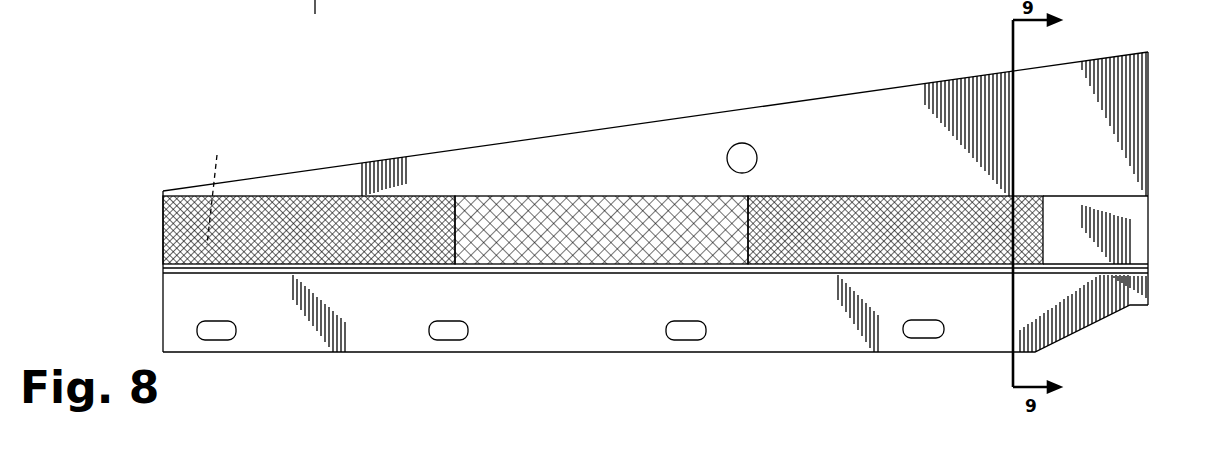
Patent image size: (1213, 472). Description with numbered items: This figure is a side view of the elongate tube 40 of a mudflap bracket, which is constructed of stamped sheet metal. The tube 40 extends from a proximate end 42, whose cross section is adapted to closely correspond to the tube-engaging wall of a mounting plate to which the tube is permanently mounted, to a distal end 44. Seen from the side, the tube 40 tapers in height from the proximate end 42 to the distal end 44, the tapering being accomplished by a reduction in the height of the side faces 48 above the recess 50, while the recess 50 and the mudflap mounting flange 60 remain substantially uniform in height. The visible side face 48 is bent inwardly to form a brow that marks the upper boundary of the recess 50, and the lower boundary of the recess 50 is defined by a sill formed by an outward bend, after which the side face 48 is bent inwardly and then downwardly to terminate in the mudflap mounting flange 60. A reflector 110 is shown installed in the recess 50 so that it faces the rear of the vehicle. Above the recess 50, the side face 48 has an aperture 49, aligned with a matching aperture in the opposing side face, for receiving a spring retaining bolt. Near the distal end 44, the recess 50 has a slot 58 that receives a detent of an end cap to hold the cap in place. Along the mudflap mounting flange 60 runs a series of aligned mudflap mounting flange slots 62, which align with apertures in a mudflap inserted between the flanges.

The tube 40 is at (610, 126).
The proximate end 42 is at (1149, 80).
The distal end 44 is at (162, 190).
The side faces 48 is at (872, 154).
The aperture 49 is at (741, 143).
The recess 50 is at (1137, 233).
The slot 58 is at (218, 189).
The mudflap mounting flange 60 is at (805, 352).
The mudflap mounting flange slots 62 is at (236, 337).
The reflector 110 is at (765, 205).